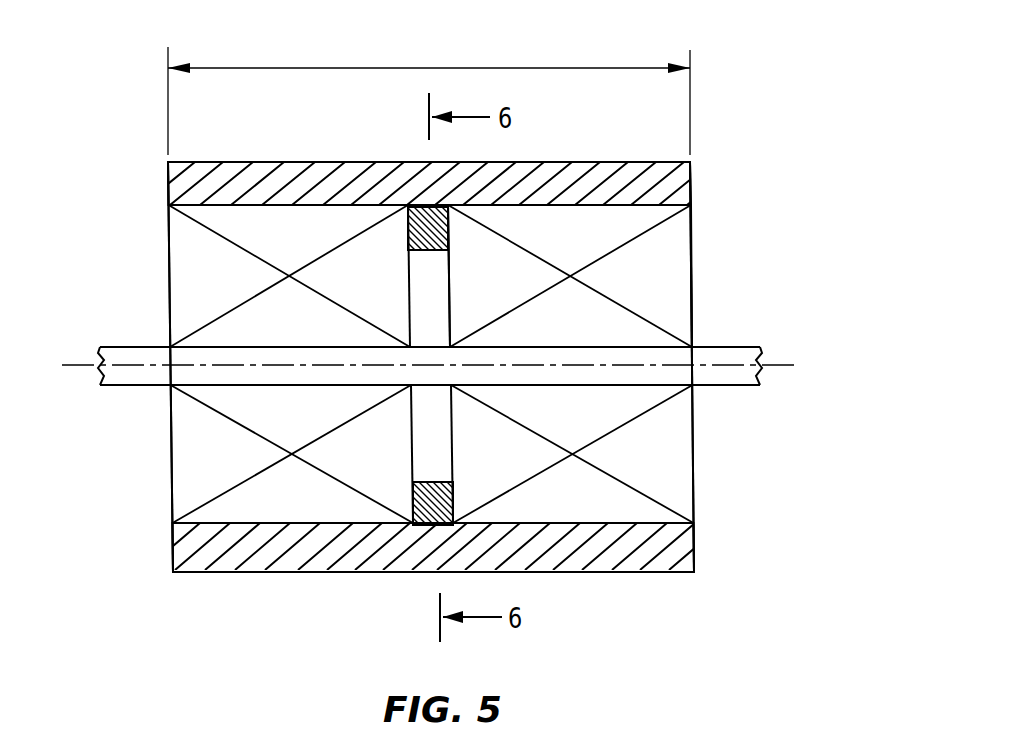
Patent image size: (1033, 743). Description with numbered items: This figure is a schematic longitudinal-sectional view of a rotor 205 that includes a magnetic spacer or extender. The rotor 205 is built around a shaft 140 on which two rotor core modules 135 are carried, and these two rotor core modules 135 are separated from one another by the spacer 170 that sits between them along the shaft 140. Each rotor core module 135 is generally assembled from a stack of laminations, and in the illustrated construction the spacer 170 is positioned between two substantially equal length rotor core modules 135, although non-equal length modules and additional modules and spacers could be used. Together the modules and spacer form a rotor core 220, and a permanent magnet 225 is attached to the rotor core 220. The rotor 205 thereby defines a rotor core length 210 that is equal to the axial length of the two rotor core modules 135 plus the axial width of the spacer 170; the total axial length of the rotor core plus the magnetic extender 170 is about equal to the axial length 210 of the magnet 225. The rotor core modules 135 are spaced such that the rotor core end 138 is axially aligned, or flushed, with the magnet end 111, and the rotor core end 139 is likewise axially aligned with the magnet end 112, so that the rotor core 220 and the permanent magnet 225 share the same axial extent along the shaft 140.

The rotor 205 is at (752, 68).
The rotor core length 210 is at (386, 68).
The permanent magnet 225 is at (655, 162).
The rotor core 220 is at (731, 237).
The spacer 170 is at (407, 236).
The magnet end 111 is at (168, 190).
The magnet end 112 is at (697, 552).
The rotor core module 135 is at (672, 275).
The rotor core end 138 is at (169, 267).
The rotor core end 139 is at (697, 480).
The shaft 140 is at (743, 372).